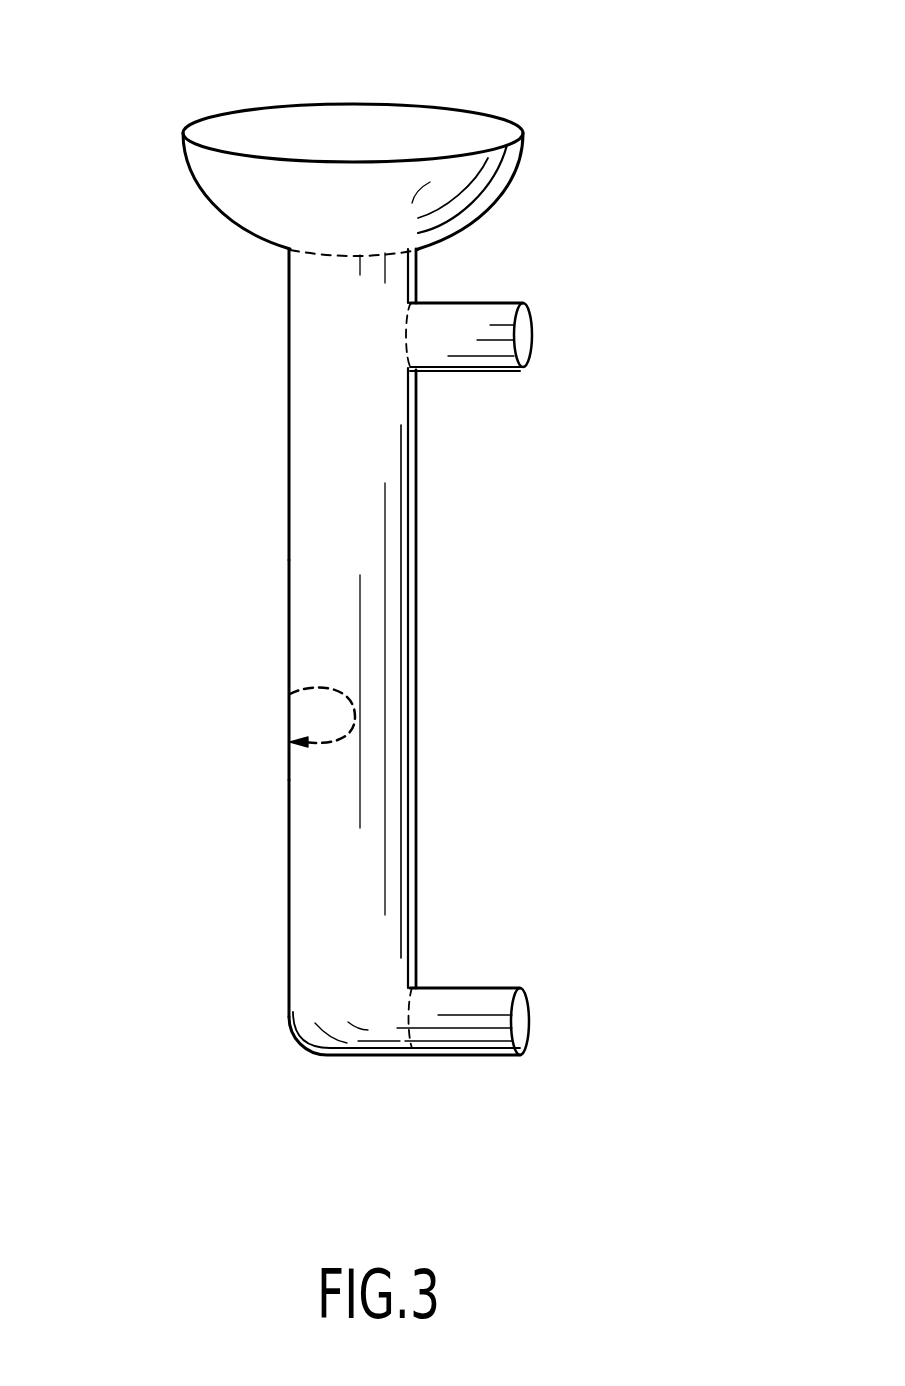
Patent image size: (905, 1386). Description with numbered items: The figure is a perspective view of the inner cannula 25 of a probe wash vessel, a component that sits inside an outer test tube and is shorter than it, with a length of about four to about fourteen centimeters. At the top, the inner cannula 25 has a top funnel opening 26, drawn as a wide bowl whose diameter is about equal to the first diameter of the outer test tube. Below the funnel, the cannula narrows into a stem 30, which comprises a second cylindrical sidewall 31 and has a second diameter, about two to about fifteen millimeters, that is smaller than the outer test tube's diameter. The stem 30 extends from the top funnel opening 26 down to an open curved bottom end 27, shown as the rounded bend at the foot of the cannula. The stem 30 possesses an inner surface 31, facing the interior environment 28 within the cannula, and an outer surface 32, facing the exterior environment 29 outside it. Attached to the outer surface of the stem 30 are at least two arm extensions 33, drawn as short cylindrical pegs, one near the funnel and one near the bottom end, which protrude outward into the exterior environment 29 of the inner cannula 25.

The inner cannula 25 is at (264, 523).
The top funnel opening 26 is at (419, 135).
The open curved bottom end 27 is at (336, 1073).
The interior environment 28 is at (377, 612).
The exterior environment 29 is at (449, 719).
The stem 30 is at (264, 828).
The second cylindrical sidewall 31 is at (290, 693).
The outer surface 32 is at (271, 610).
The arm extensions 33 is at (497, 287).